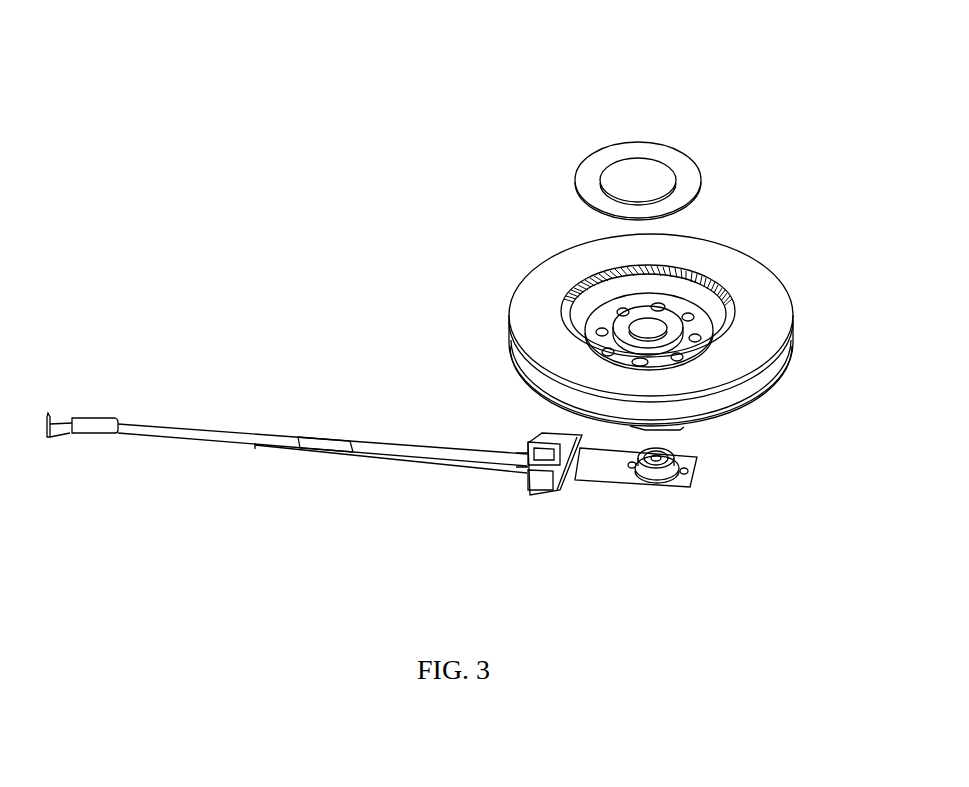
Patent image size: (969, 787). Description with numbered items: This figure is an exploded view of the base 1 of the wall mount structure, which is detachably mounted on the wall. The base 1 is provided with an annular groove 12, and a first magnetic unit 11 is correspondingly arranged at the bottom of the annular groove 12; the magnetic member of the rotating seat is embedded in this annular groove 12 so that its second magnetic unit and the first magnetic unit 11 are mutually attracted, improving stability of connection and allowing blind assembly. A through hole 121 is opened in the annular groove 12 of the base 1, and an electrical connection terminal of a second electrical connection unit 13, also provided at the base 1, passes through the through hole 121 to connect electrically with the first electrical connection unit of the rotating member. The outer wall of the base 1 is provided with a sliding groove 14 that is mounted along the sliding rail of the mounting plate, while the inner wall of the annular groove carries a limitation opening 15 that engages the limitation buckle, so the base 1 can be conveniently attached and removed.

The base 1 is at (531, 291).
The first magnetic unit 11 is at (637, 147).
The annular groove 12 is at (717, 288).
The through hole 121 is at (652, 333).
The second electrical connection unit 13 is at (655, 487).
The sliding groove 14 is at (630, 430).
The limitation opening 15 is at (617, 270).